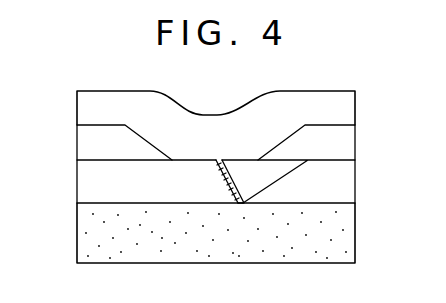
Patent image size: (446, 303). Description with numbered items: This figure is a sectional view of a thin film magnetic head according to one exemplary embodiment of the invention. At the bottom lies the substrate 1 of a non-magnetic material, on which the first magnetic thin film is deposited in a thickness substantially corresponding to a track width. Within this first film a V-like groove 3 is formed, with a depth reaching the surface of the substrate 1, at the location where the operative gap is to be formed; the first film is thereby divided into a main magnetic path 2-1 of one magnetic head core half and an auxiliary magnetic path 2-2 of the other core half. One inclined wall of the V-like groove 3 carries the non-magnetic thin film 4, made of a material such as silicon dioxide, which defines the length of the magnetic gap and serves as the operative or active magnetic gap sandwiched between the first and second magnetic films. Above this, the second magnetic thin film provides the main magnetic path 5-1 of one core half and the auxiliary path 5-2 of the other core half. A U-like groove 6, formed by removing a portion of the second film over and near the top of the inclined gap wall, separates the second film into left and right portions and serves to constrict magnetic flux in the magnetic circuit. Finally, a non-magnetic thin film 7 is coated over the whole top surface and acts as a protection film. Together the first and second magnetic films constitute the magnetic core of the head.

The substrate 1 is at (357, 235).
The main magnetic path 2-1 is at (77, 182).
The auxiliary magnetic path 2-2 is at (357, 183).
The V-like groove 3 is at (239, 190).
The non-magnetic thin film 4 is at (225, 180).
The main magnetic path 5-1 is at (77, 145).
The auxiliary path 5-2 is at (357, 146).
The U-like groove 6 is at (175, 154).
The non-magnetic thin film 7 is at (77, 108).